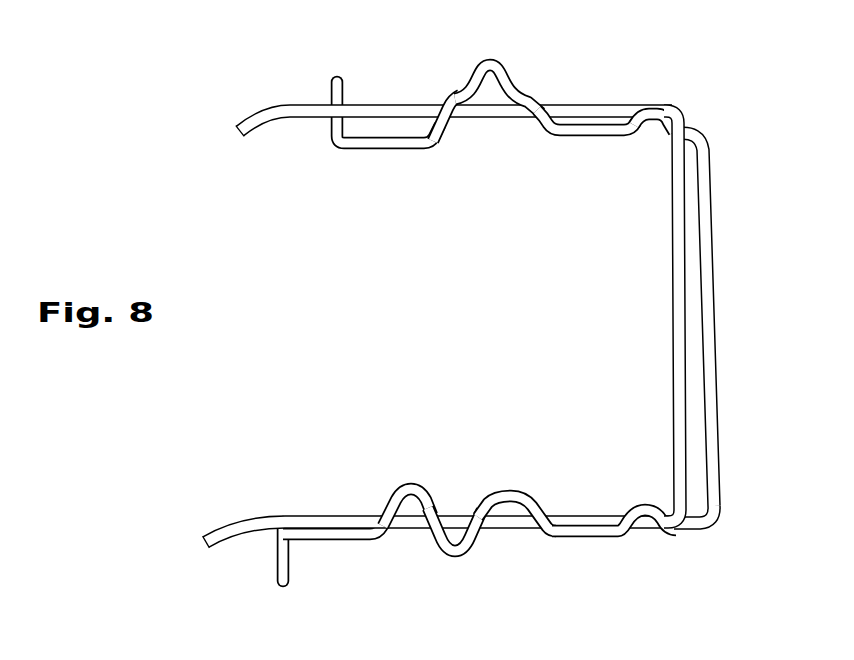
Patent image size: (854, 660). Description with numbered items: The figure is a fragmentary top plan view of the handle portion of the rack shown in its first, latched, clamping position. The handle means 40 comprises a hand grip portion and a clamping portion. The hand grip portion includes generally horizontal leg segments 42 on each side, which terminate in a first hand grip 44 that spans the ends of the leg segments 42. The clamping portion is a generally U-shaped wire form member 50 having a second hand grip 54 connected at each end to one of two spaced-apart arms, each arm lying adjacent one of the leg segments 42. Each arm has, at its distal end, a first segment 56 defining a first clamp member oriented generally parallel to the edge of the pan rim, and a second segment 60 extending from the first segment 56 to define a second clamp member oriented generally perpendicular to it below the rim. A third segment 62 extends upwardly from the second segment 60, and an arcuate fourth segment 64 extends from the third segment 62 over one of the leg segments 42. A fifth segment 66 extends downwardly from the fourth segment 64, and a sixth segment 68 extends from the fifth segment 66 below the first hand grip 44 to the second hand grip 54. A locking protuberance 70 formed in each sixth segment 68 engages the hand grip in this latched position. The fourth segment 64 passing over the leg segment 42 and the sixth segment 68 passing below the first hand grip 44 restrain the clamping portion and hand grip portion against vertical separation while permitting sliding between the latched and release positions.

The handle means 40 is at (592, 252).
The leg segment 42 is at (580, 106).
The first hand grip 44 is at (672, 317).
The wire form member 50 is at (697, 540).
The second hand grip 54 is at (712, 348).
The first segment 56 is at (330, 92).
The second segment 60 is at (363, 150).
The third segment 62 is at (437, 133).
The fourth segment 64 is at (490, 58).
The fifth segment 66 is at (553, 128).
The sixth segment 68 is at (690, 129).
The locking protuberance 70 is at (647, 124).